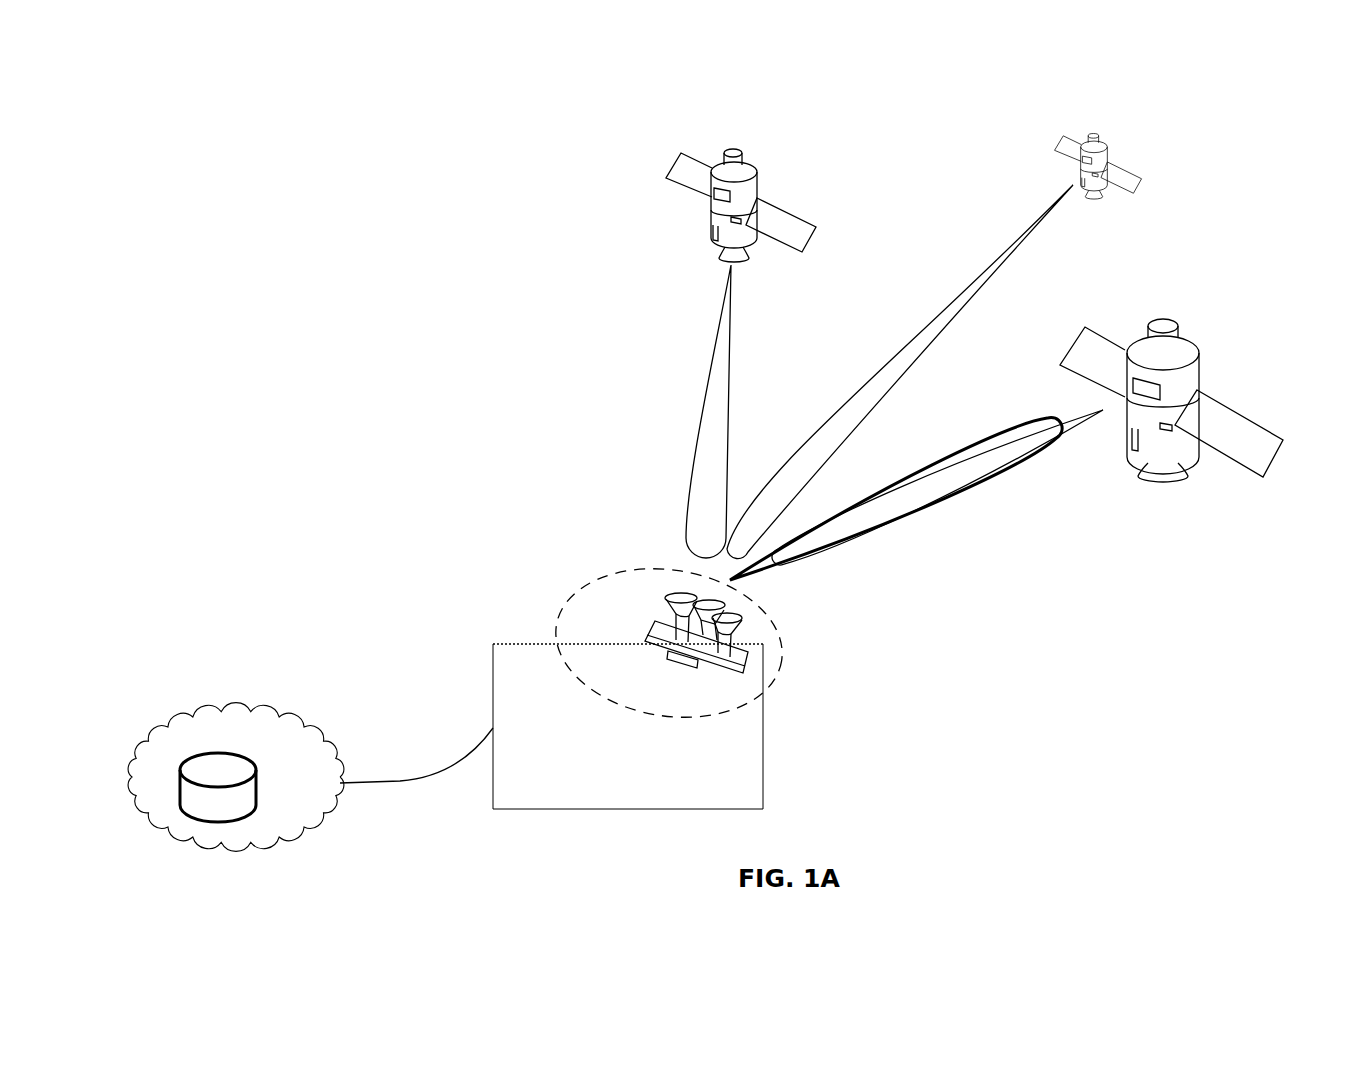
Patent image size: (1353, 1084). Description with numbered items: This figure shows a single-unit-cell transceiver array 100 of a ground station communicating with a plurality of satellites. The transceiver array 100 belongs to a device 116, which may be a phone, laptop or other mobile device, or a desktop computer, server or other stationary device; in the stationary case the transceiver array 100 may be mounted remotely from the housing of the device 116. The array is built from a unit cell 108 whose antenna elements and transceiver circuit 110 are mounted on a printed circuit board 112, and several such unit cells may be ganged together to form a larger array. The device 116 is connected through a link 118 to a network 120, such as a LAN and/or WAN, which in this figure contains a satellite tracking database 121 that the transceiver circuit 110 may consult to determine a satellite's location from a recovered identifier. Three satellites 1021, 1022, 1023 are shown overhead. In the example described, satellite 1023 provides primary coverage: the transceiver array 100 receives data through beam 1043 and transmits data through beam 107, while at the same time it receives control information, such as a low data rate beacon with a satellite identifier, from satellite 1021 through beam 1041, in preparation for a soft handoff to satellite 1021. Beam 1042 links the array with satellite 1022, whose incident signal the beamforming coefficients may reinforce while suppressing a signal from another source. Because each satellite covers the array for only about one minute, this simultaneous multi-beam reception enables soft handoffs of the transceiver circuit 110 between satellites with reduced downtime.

The transceiver array 100 is at (583, 582).
The satellite 1021 is at (733, 151).
The satellite 1022 is at (1090, 140).
The satellite 1023 is at (1158, 318).
The beam 1041 is at (695, 425).
The beam 1042 is at (892, 360).
The beam 1043 is at (1076, 418).
The beam 107 is at (760, 571).
The unit cell 108 is at (637, 593).
The transceiver circuit 110 is at (688, 661).
The printed circuit board 112 is at (650, 633).
The device 116 is at (524, 644).
The link 118 is at (469, 763).
The network 120 is at (227, 708).
The satellite tracking database 121 is at (212, 755).